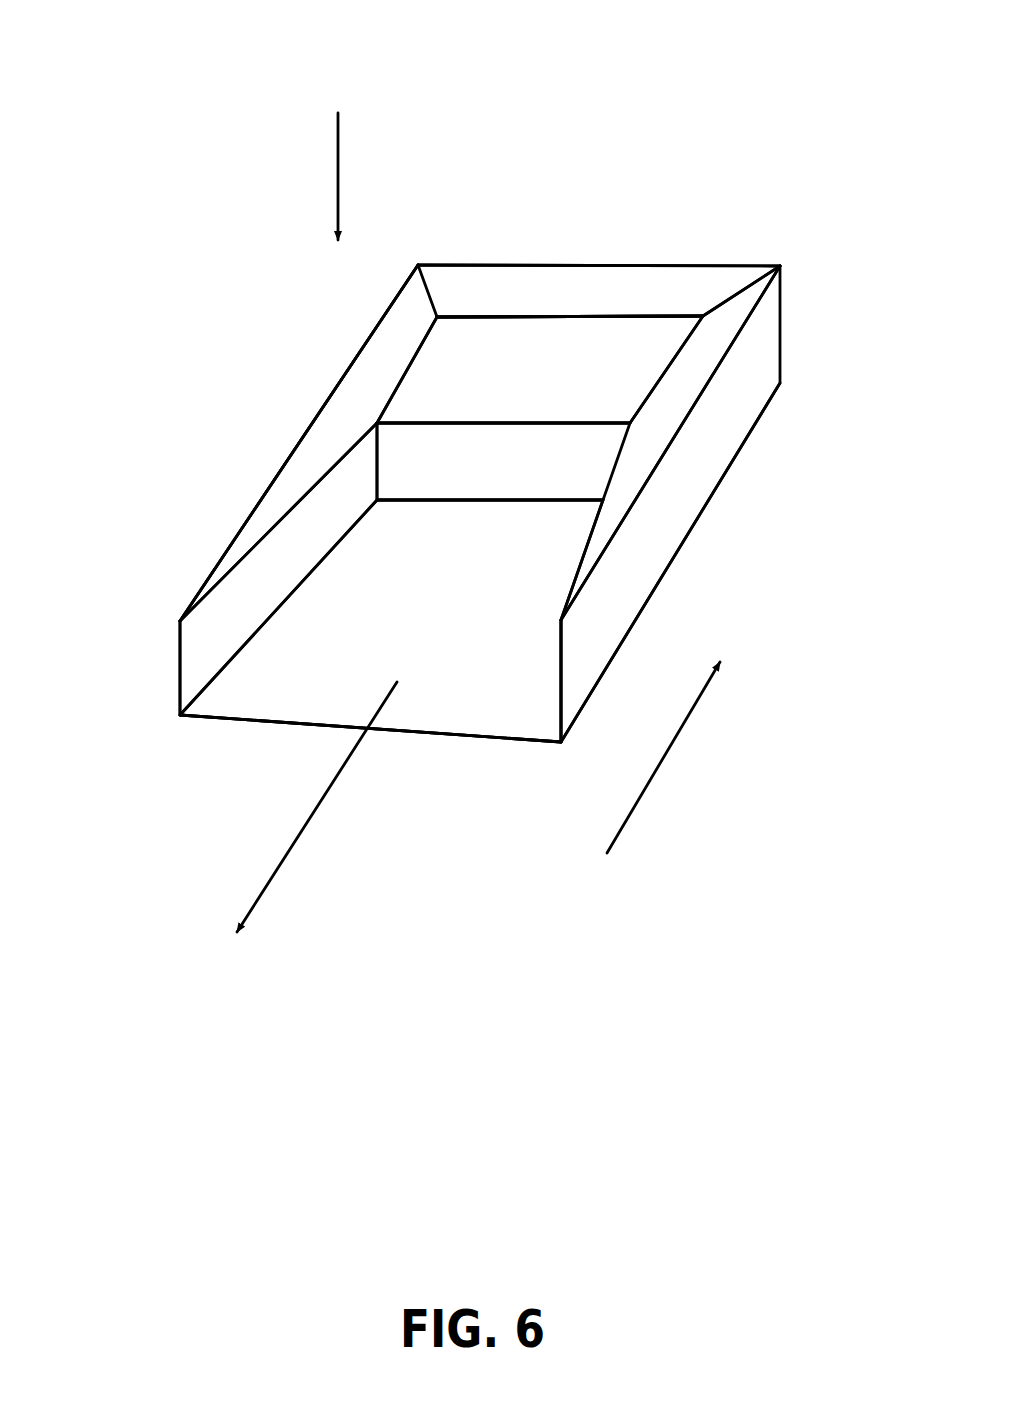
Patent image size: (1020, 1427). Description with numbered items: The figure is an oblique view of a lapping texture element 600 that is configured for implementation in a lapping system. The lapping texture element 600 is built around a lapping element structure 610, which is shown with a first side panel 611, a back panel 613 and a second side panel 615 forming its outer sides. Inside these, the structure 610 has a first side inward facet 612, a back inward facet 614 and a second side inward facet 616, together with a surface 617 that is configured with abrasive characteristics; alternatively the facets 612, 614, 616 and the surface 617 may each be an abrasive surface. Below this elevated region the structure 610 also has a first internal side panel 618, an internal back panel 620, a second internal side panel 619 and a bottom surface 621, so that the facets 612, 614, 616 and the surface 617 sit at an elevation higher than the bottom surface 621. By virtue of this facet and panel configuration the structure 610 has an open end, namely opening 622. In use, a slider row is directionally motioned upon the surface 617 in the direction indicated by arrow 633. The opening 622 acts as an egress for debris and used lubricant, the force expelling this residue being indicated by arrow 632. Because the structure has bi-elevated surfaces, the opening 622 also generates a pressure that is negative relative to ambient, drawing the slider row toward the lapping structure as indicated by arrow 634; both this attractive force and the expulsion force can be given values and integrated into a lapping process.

The lapping texture element 600 is at (648, 37).
The lapping element structure 610 is at (777, 342).
The first side panel 611 is at (715, 433).
The first side inward facet 612 is at (685, 378).
The back panel 613 is at (598, 343).
The back inward facet 614 is at (510, 290).
The second side panel 615 is at (225, 570).
The second side inward facet 616 is at (350, 400).
The surface 617 is at (472, 342).
The first internal side panel 618 is at (553, 707).
The second internal side panel 619 is at (195, 645).
The internal back panel 620 is at (433, 457).
The bottom surface 621 is at (465, 615).
The opening 622 is at (323, 665).
The arrow 632 is at (268, 883).
The arrow 633 is at (683, 728).
The arrow 634 is at (340, 172).